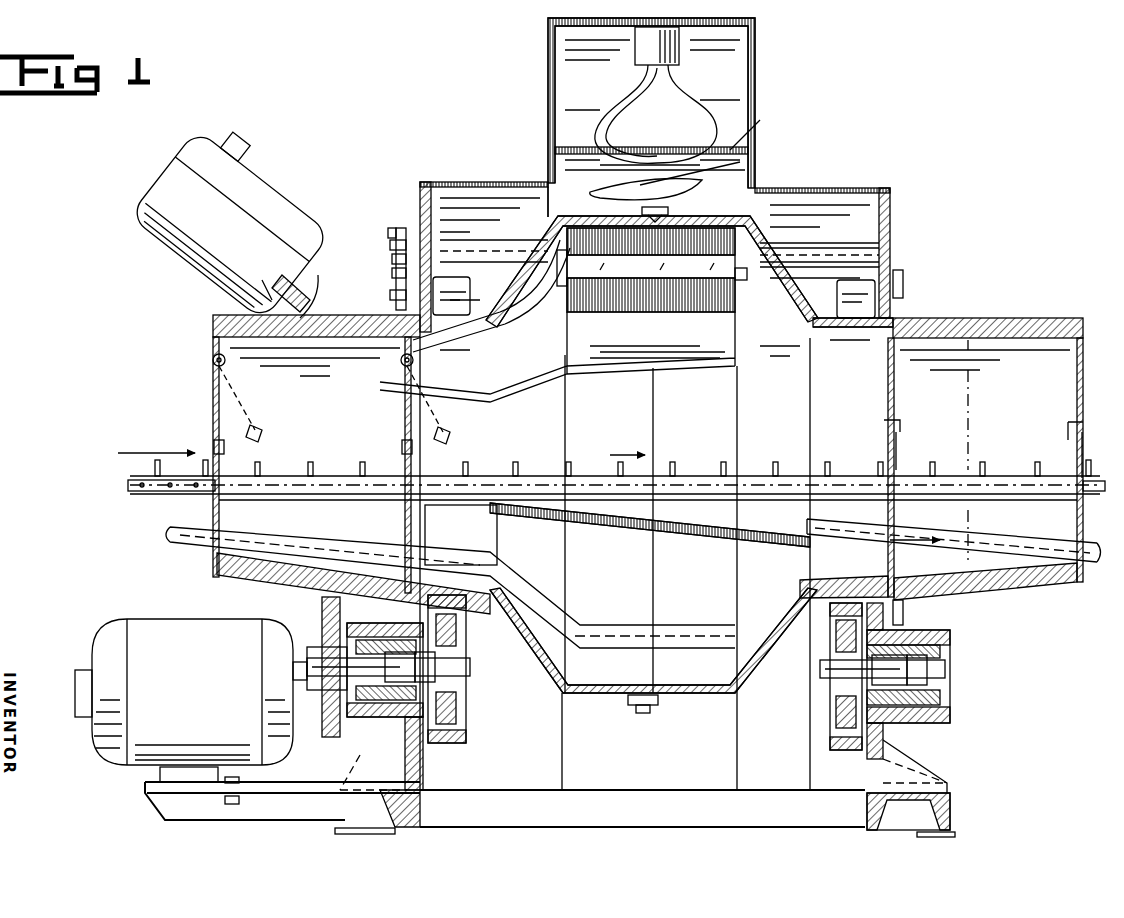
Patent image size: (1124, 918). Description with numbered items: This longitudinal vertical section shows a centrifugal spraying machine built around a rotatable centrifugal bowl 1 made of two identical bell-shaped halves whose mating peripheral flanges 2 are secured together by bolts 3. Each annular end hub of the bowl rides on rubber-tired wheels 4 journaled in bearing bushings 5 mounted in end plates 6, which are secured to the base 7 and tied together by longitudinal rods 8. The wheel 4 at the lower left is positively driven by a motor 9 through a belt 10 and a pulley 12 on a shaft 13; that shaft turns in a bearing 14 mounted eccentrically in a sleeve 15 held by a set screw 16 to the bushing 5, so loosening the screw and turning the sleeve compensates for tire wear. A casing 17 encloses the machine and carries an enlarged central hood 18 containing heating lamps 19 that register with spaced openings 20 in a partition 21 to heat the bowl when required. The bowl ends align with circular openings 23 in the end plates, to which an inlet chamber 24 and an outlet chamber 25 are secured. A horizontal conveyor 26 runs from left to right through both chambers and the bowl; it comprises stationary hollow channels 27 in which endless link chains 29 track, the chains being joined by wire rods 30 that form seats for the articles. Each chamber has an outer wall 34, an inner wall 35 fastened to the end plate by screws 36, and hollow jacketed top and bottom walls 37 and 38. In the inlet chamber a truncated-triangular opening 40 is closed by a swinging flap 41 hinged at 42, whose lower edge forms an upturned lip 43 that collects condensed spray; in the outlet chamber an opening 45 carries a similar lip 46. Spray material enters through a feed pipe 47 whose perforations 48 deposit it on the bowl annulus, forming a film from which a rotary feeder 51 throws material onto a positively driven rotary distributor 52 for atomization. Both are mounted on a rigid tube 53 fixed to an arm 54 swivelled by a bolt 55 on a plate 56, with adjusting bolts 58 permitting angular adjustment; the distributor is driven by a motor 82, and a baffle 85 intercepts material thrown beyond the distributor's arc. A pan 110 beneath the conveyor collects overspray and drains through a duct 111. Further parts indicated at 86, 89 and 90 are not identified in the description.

The centrifugal bowl 1 is at (772, 238).
The peripheral flanges 2 is at (640, 212).
The bolts 3 is at (672, 216).
The rubber-tired wheels 4 is at (460, 280).
The bearing bushings 5 is at (370, 728).
The end plates 6 is at (420, 195).
The base 7 is at (950, 806).
The longitudinal rods 8 is at (806, 250).
The motor 9 is at (128, 750).
The belt 10 is at (320, 600).
The pulley 12 is at (322, 612).
The shaft 13 is at (307, 666).
The bearing 14 is at (436, 666).
The sleeve 15 is at (420, 700).
The set screw 16 is at (388, 747).
The casing 17 is at (803, 186).
The central hood 18 is at (548, 60).
The heating lamps 19 is at (690, 118).
The spaced openings 20 is at (745, 160).
The partition 21 is at (740, 135).
The circular openings 23 is at (428, 580).
The inlet chamber 24 is at (248, 520).
The outlet chamber 25 is at (1064, 565).
The horizontal conveyor 26 is at (672, 478).
The hollow channels 27 is at (570, 480).
The endless link chains 29 is at (130, 491).
The wire rods 30 is at (150, 466).
The outer wall 34 is at (213, 348).
The inner wall 35 is at (405, 514).
The screws 36 is at (396, 302).
The top wall 37 is at (213, 326).
The bottom wall 38 is at (228, 582).
The truncated-triangular opening 40 is at (225, 448).
The swinging flap 41 is at (213, 398).
The hinge 42 is at (226, 362).
The lip 43 is at (265, 430).
The opening 45 is at (900, 450).
The lip 46 is at (884, 422).
The feed pipe 47 is at (302, 540).
The perforations 48 is at (665, 636).
The rotary feeder 51 is at (747, 210).
The rotary distributor 52 is at (655, 310).
The rigid tube 53 is at (318, 275).
The arm 54 is at (392, 258).
The swivel bolt 55 is at (392, 272).
The plate 56 is at (396, 232).
The adjusting bolts 58 is at (388, 240).
The motor 82 is at (275, 162).
The baffle 85 is at (695, 305).
The duct 86 is at (506, 312).
The plate 89 is at (735, 352).
The baffle 90 is at (514, 395).
The pan 110 is at (686, 530).
The duct 111 is at (834, 535).